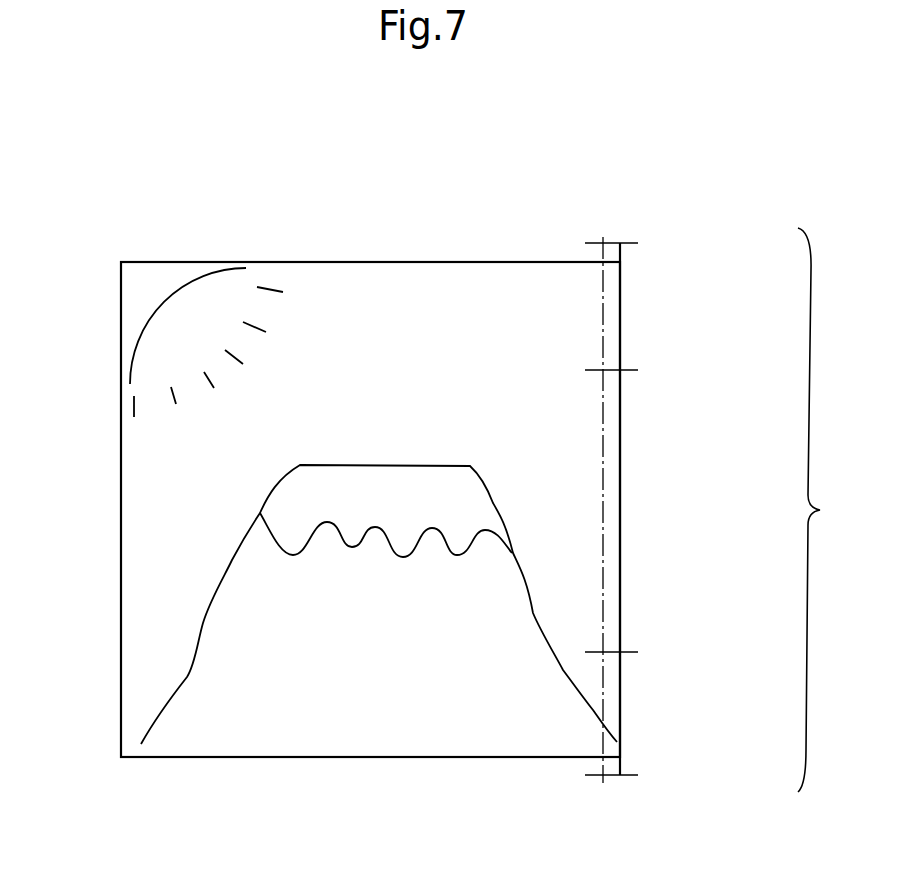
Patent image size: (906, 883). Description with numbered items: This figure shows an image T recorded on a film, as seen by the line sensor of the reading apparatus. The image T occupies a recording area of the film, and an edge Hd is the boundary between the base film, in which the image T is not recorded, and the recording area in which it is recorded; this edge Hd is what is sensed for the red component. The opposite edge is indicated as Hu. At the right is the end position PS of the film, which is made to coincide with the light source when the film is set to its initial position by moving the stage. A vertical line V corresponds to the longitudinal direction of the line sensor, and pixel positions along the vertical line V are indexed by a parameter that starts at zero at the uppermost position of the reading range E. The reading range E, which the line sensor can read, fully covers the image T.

The image T is at (113, 562).
The edge Hd is at (445, 262).
The lower edge of image Hu is at (443, 757).
The end position PS is at (674, 495).
The vertical line V is at (603, 542).
The reading range E is at (822, 510).